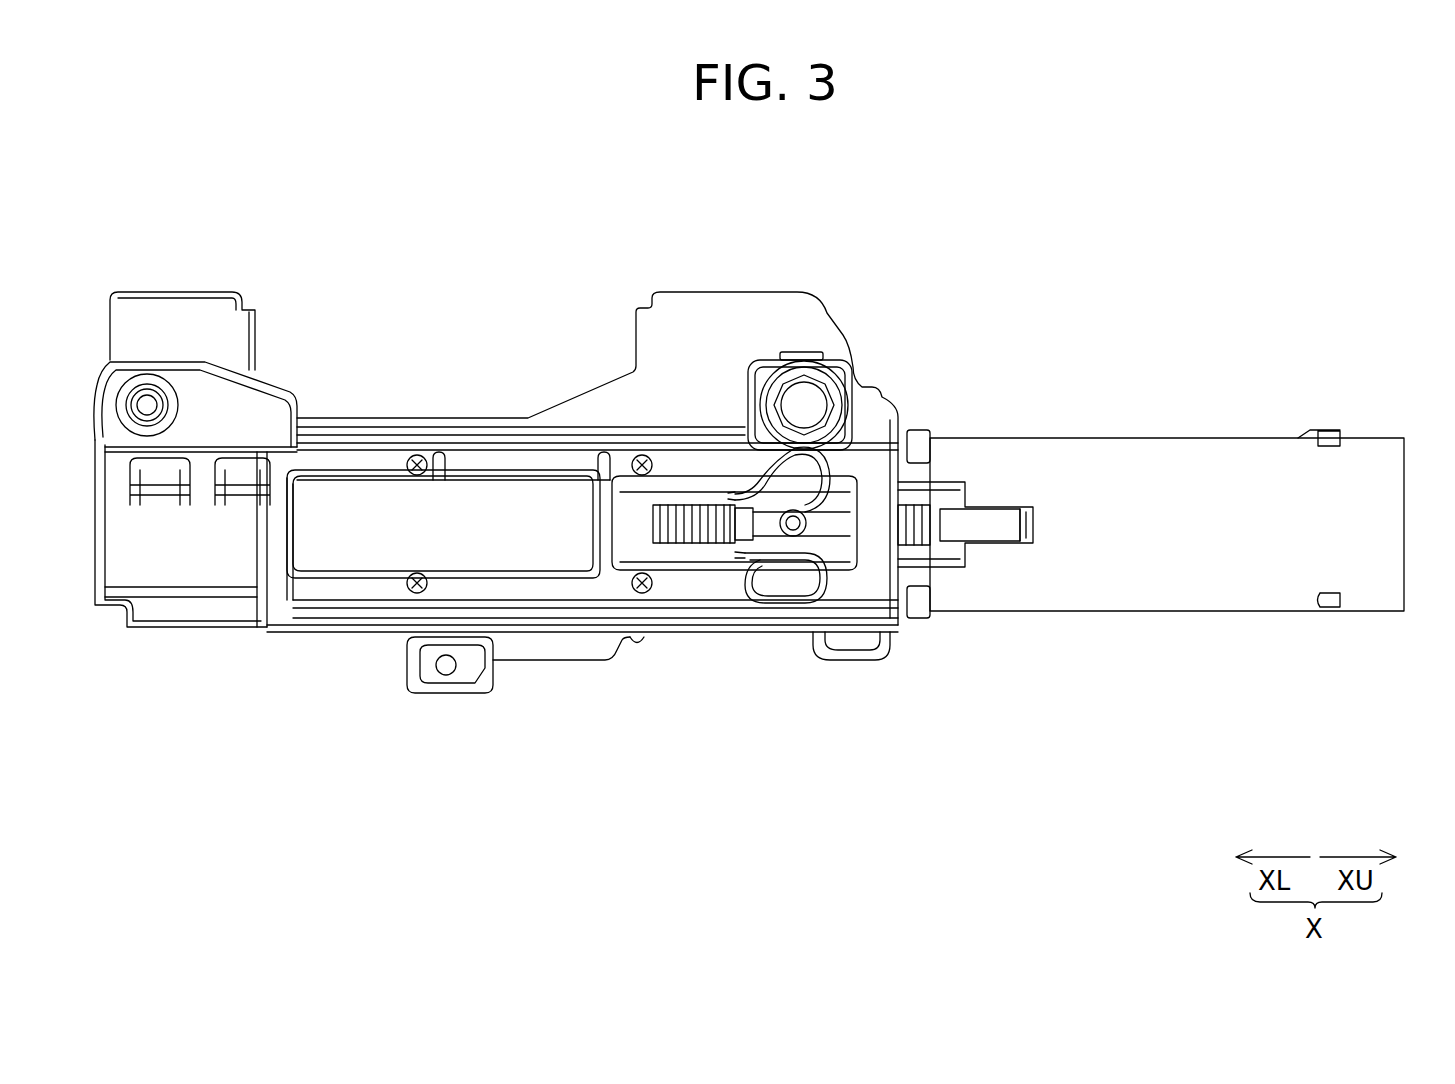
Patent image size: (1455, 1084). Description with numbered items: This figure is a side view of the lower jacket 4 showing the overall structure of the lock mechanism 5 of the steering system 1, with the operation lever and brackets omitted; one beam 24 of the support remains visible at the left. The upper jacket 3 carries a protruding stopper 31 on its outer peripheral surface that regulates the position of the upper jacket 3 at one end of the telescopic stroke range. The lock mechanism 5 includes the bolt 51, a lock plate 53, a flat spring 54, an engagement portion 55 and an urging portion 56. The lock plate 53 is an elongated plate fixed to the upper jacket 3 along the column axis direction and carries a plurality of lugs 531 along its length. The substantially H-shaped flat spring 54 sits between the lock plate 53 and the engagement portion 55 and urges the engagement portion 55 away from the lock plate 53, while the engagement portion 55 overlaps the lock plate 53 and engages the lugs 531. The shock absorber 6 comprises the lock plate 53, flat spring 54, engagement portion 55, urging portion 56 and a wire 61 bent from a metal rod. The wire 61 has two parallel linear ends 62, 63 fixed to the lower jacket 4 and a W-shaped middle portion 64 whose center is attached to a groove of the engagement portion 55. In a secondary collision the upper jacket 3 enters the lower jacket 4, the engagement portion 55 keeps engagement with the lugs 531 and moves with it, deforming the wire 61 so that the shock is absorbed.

The steering system 1 is at (1408, 206).
The upper jacket 3 is at (1360, 452).
The lower jacket 4 is at (355, 450).
The lock mechanism 5 is at (868, 372).
The shock absorber 6 is at (815, 662).
The beam 24 is at (192, 615).
The stopper 31 is at (940, 436).
The bolt 51 is at (800, 400).
The lock plate 53 is at (648, 528).
The flat spring 54 is at (740, 555).
The engagement portion 55 is at (830, 532).
The urging portion 56 is at (797, 528).
The wire 61 is at (720, 600).
The end 62 is at (470, 440).
The end 63 is at (490, 600).
The middle portion 64 is at (817, 577).
The lugs 531 is at (692, 545).